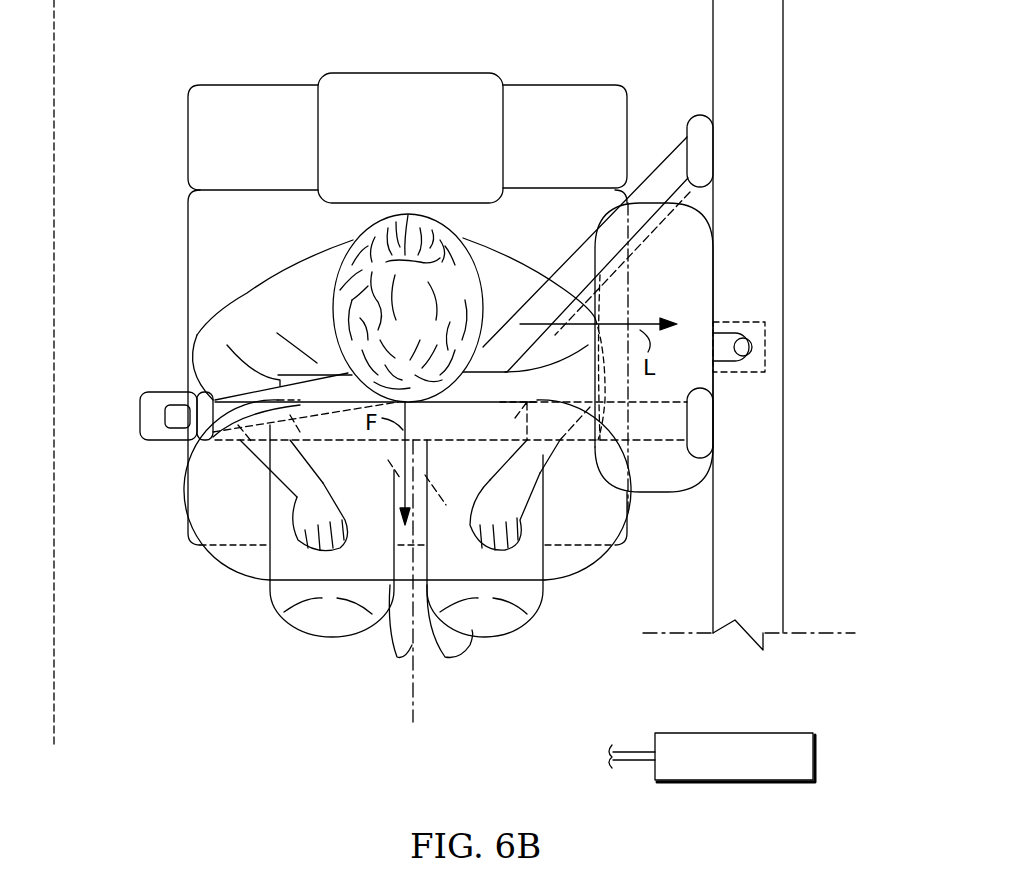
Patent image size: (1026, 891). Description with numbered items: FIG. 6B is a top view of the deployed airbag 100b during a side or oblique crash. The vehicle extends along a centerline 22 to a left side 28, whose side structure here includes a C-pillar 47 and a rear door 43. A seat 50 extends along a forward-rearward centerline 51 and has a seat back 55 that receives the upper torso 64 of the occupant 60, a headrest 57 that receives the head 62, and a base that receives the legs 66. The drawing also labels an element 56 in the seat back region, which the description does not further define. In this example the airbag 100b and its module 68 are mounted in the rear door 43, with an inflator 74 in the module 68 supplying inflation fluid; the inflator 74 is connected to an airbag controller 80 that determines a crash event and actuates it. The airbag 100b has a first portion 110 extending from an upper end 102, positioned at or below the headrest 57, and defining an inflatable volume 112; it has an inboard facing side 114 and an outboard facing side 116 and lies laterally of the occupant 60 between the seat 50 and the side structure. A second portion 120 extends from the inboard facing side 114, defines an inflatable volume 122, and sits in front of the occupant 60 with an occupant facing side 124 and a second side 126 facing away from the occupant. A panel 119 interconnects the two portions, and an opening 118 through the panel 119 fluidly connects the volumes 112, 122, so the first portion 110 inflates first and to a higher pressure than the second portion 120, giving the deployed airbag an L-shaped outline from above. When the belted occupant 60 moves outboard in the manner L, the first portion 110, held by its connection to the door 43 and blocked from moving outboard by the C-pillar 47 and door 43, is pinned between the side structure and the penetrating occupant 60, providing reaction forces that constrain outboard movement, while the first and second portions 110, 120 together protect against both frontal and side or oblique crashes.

The centerline 22 is at (57, 40).
The left side 28 is at (820, 192).
The door 43 is at (733, 438).
The C-pillar 47 is at (768, 32).
The seat 50 is at (187, 240).
The forward-rearward centerline 51 is at (410, 705).
The seat back 55 is at (528, 100).
The shoulder belt portion 56 is at (585, 257).
The headrest 57 is at (370, 85).
The occupant 60 is at (190, 350).
The head 62 is at (410, 245).
The upper torso 64 is at (222, 318).
The legs 66 is at (325, 620).
The module 68 is at (764, 377).
The inflator 74 is at (752, 347).
The airbag controller 80 is at (735, 733).
The airbag 100b is at (177, 581).
The upper end 102 is at (655, 465).
The first portion 110 is at (668, 258).
The inflatable volume 112 is at (692, 228).
The inboard facing side 114 is at (592, 280).
The outboard facing side 116 is at (713, 468).
The opening 118 is at (590, 490).
The panel 119 is at (596, 460).
The second portion 120 is at (225, 500).
The inflatable volume 122 is at (598, 525).
The occupant facing side 124 is at (297, 400).
The second side 126 is at (258, 580).